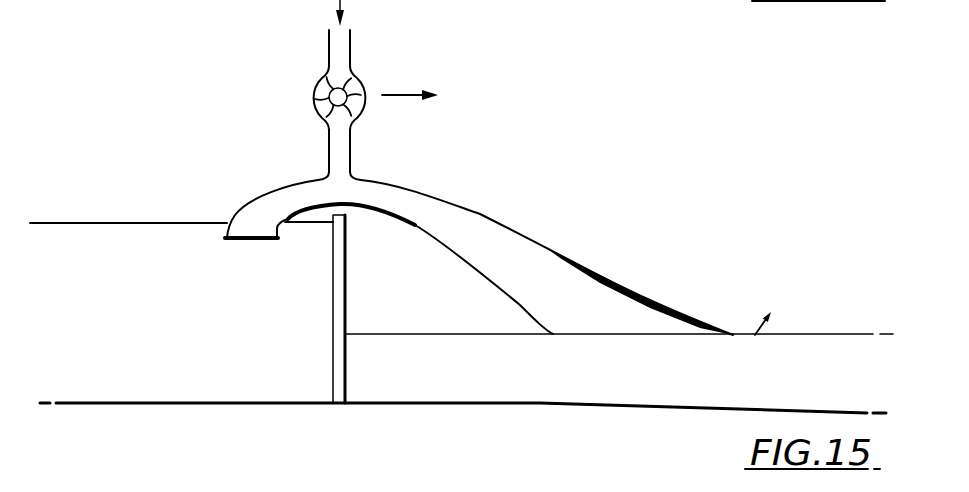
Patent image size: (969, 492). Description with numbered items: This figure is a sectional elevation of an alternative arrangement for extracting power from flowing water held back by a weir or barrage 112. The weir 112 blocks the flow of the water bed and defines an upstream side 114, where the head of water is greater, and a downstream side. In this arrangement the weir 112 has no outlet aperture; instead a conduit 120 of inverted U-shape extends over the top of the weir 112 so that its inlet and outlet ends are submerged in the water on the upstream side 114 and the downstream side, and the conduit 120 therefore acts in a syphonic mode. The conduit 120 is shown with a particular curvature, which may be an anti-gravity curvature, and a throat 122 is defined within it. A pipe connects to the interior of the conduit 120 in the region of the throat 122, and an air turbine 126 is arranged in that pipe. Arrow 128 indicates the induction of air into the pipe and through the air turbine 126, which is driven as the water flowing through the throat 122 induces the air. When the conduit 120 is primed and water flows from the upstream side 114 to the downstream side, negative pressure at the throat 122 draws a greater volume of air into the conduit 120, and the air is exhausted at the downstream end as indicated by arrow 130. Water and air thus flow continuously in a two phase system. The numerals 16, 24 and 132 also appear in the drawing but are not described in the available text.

The water surface 16 is at (833, 348).
The conduit 24 is at (351, 151).
The weir or barrage 112 is at (345, 298).
The upstream side 114 is at (112, 238).
The conduit 120 is at (505, 218).
The throat 122 is at (311, 177).
The air turbine 126 is at (358, 72).
The arrow indicating induction of air 128 is at (358, 0).
The arrow indicating return of air 130 is at (725, 356).
The discharge flow 132 is at (407, 96).